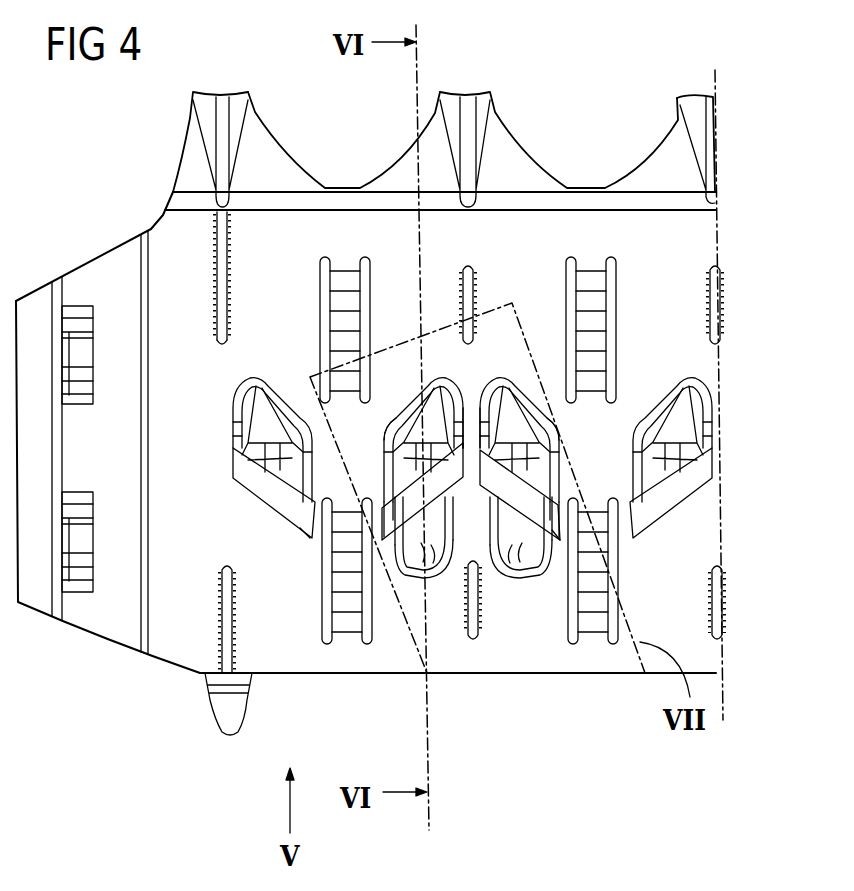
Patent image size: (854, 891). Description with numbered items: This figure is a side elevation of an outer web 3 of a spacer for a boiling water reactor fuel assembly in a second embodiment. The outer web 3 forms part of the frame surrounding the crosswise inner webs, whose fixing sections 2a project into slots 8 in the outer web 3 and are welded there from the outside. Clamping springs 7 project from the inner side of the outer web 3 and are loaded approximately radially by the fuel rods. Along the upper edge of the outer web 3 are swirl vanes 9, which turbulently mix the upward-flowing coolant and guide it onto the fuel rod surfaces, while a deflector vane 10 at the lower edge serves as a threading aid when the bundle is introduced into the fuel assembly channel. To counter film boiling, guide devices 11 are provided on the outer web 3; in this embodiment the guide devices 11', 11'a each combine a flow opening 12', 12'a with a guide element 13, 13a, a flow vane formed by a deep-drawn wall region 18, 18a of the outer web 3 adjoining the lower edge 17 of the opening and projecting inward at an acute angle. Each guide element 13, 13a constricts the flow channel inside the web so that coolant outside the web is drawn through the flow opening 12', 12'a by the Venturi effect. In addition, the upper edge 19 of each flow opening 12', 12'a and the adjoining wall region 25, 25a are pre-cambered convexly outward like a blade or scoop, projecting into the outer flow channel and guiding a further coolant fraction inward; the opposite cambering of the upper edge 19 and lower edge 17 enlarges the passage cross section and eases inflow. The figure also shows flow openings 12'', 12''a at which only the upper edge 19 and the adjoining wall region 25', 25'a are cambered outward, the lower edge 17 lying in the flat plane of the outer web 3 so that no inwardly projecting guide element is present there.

The fixing sections 2a is at (218, 296).
The outer webs 3 is at (697, 543).
The clamping springs 7 is at (595, 293).
The slots 8 is at (228, 268).
The swirl vanes 9 is at (498, 140).
The deflector vanes 10 is at (225, 712).
The guide devices 11 is at (395, 510).
The clip loop insertion direction 11' is at (423, 333).
The clip loop insertion direction 11'a is at (545, 333).
The flow opening 12' is at (420, 372).
The flow opening 12'a is at (507, 353).
The flow opening 12'' is at (253, 495).
The retaining plate 12''a is at (716, 493).
The guide element 13 is at (437, 572).
The loop bottom 13a is at (520, 572).
The lower edge 17 is at (311, 538).
The deep-drawn wall region 18 is at (410, 572).
The loop side 18a is at (513, 573).
The upper edge 19 is at (545, 490).
The wall region 25 is at (402, 457).
The wall region 25' is at (246, 440).
The wall region 25a is at (532, 437).
The spring clip arch 25'a is at (715, 440).